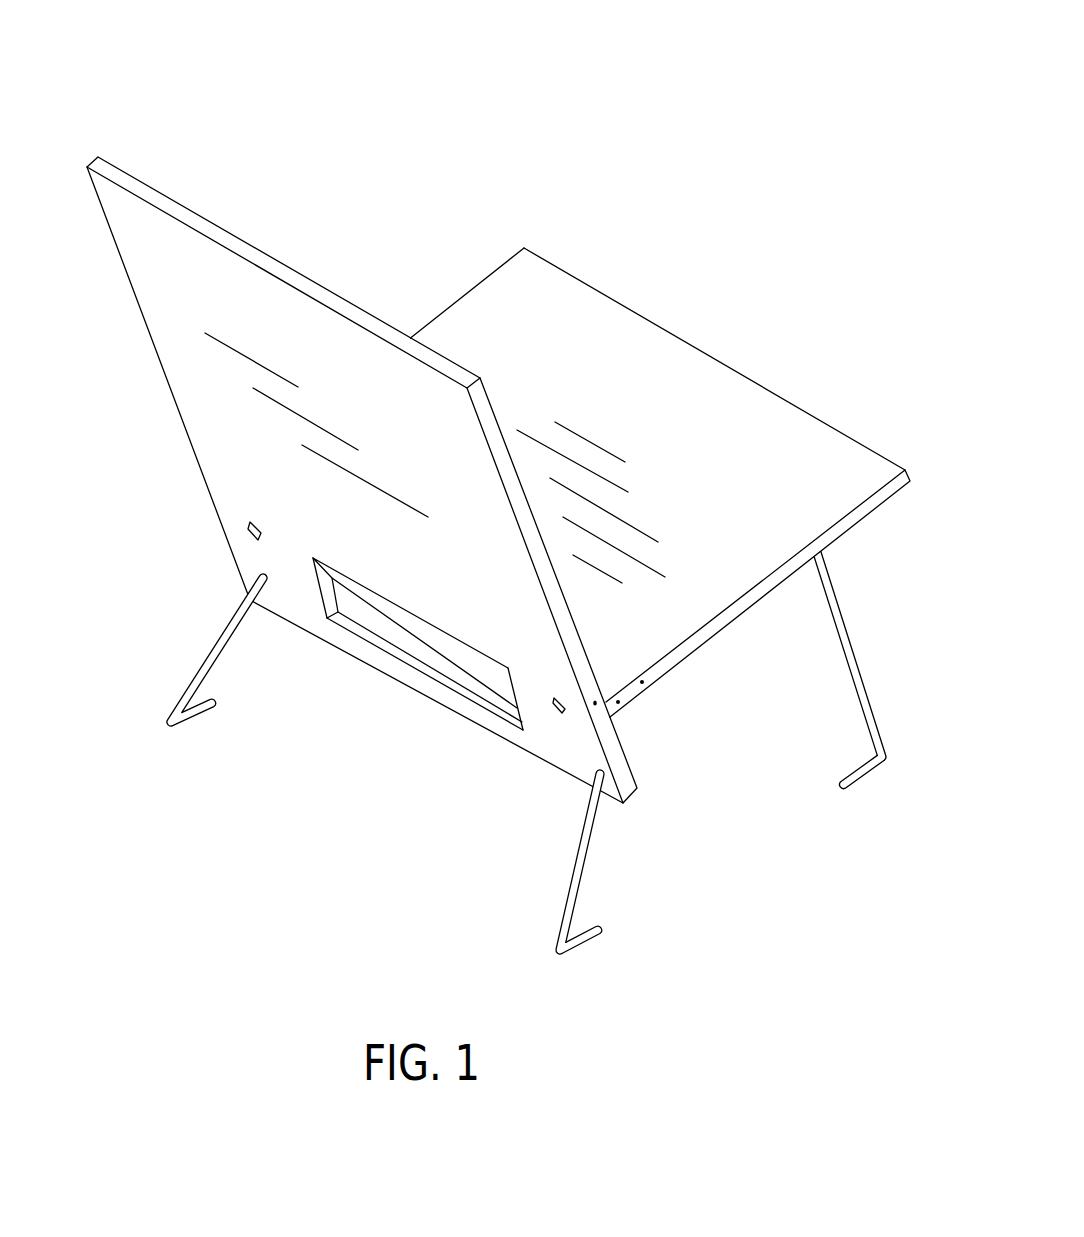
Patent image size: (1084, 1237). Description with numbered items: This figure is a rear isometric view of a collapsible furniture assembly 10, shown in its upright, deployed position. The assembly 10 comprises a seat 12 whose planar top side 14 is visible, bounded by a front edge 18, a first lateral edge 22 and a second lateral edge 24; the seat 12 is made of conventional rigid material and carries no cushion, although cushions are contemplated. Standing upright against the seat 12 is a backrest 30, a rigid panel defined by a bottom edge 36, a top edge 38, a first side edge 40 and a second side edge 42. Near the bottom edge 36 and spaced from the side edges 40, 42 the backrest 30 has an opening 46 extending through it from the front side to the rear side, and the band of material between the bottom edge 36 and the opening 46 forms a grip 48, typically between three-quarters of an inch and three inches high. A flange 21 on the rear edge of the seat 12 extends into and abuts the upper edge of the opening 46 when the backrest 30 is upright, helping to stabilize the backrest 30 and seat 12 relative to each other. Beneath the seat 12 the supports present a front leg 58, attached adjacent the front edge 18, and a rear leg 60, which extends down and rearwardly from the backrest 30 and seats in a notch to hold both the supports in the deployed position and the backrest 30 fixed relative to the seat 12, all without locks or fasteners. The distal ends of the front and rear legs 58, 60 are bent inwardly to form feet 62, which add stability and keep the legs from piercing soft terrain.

The collapsible furniture assembly 10 is at (504, 528).
The seat 12 is at (687, 458).
The top side 14 is at (759, 440).
The front edge 18 is at (670, 328).
The flange 21 is at (397, 607).
The first lateral edge 22 is at (715, 635).
The second lateral edge 24 is at (473, 285).
The backrest 30 is at (365, 459).
The bottom edge 36 is at (305, 628).
The top edge 38 is at (235, 240).
The first side edge 40 is at (618, 759).
The second side edge 42 is at (173, 398).
The opening 46 is at (415, 714).
The grip 48 is at (485, 712).
The front leg 58 is at (875, 705).
The rear leg 60 is at (568, 882).
The feet 62 is at (858, 785).